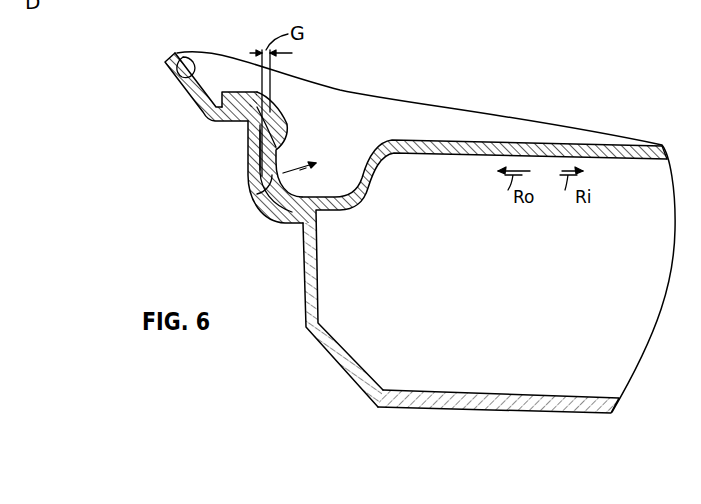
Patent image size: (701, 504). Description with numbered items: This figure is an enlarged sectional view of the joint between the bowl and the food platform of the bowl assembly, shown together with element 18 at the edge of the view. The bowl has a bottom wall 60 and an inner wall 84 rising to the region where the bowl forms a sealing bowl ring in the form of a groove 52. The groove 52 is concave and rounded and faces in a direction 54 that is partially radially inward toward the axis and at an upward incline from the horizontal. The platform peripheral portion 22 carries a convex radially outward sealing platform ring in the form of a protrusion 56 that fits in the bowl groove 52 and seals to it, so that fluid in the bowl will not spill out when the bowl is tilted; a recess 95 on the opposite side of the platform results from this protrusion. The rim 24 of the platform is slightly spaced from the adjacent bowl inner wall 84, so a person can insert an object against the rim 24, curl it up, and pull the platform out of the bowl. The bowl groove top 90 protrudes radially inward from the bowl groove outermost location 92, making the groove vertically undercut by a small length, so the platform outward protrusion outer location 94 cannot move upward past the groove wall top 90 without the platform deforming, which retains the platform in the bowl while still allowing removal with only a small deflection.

The vehicle body 18 is at (105, 6).
The peripheral portion 22 is at (337, 215).
The rim 24 is at (247, 74).
The groove 52 is at (292, 204).
The direction 54 is at (300, 160).
The protrusion 56 is at (262, 150).
The bottom wall 60 is at (521, 394).
The bowl inner wall 84 is at (176, 76).
The bowl groove top 90 is at (284, 137).
The bowl groove outermost location 92 is at (257, 194).
The platform outward protrusion outer location 94 is at (254, 160).
The recess 95 is at (307, 194).